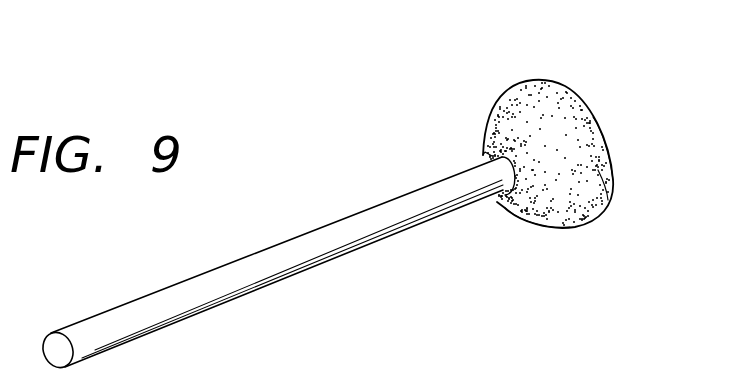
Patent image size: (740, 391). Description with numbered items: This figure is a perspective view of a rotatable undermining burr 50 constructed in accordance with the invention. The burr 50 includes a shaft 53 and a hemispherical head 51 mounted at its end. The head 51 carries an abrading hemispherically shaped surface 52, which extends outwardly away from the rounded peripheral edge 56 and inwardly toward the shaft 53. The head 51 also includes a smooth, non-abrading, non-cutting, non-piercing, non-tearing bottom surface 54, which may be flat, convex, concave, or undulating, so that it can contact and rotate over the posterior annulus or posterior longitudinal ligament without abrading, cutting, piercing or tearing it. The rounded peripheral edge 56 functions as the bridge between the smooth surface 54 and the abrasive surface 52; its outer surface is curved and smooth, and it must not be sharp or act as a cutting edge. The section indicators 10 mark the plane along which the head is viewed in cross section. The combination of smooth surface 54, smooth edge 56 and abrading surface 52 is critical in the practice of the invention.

The section line / viewing direction 10 is at (548, 65).
The rotatable undermining burr 50 is at (318, 217).
The hemispherical head 51 is at (500, 93).
The abrading hemispherically shaped surface 52 is at (532, 223).
The shaft 53 is at (248, 293).
The smooth non-abrading bottom surface 54 is at (607, 152).
The rounded peripheral edge 56 is at (590, 180).